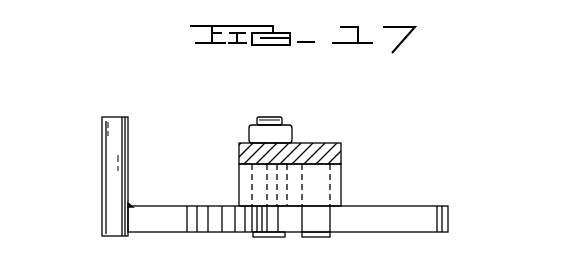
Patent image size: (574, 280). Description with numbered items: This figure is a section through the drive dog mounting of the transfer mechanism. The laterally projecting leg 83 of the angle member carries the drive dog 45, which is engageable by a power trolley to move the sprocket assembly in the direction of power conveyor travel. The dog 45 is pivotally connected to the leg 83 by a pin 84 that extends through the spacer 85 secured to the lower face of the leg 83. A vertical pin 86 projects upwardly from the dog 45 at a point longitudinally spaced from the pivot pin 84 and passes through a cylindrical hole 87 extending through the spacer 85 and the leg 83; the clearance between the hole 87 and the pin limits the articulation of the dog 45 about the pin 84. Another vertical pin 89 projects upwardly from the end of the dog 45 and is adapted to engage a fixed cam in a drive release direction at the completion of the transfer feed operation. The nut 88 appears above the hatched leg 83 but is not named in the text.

The drive dog 45 is at (386, 222).
The laterally projecting leg 83 is at (341, 152).
The pin 84 is at (317, 238).
The spacer 85 is at (341, 190).
The vertical pin 86 is at (268, 238).
The cylindrical hole 87 is at (250, 180).
The bolt head 88 is at (251, 134).
The vertical pin 89 is at (112, 170).